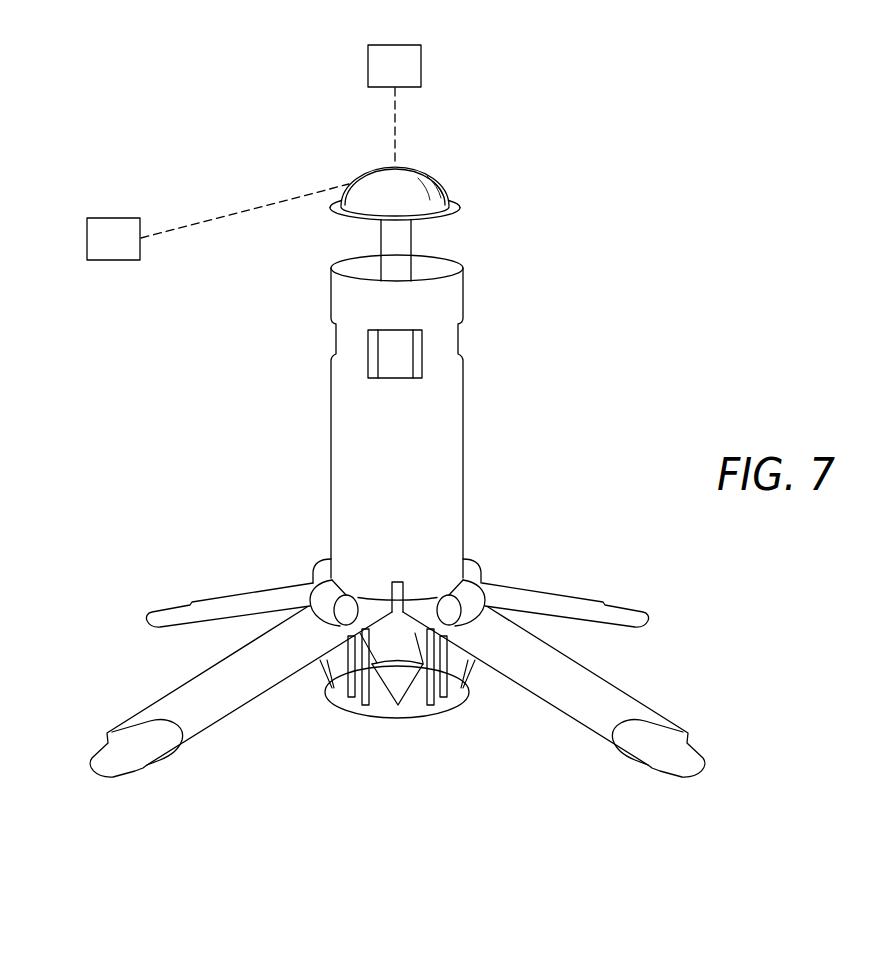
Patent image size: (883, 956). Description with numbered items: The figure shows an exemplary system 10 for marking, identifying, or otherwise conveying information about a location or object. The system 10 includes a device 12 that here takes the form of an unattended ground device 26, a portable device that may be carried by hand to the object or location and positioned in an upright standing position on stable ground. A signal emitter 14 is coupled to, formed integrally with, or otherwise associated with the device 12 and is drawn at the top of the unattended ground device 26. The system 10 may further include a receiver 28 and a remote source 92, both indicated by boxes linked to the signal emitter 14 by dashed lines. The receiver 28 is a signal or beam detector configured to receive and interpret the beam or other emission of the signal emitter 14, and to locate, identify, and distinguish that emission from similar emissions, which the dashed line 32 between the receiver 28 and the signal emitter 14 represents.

The system 10 is at (176, 353).
The device 12 is at (482, 317).
The signal emitter 14 is at (455, 184).
The unattended ground device 26 is at (464, 271).
The receiver 28 is at (100, 251).
The wireless link / beam 32 is at (257, 208).
The remote source 92 is at (381, 76).